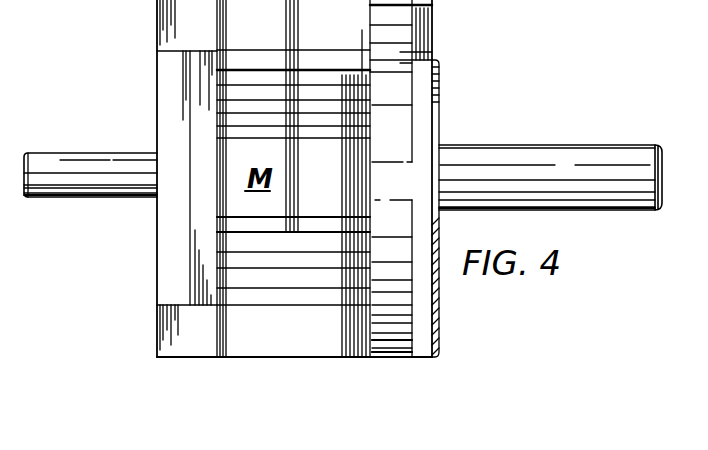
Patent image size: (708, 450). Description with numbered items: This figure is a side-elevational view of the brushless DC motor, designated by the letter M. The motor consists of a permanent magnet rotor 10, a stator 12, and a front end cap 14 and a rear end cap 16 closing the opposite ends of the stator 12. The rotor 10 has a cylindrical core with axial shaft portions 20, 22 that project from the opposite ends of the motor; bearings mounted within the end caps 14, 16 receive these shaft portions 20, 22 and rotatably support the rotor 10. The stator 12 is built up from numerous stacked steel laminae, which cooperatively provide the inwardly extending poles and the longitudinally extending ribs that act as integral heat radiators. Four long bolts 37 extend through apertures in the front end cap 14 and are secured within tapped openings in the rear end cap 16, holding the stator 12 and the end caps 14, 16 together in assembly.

The permanent magnet rotor 10 is at (507, 146).
The stator 12 is at (268, 356).
The front end cap 14 is at (438, 94).
The rear end cap 16 is at (157, 247).
The axial shaft portion 20 is at (613, 157).
The axial shaft portion 22 is at (93, 160).
The long bolts 37 is at (408, 360).